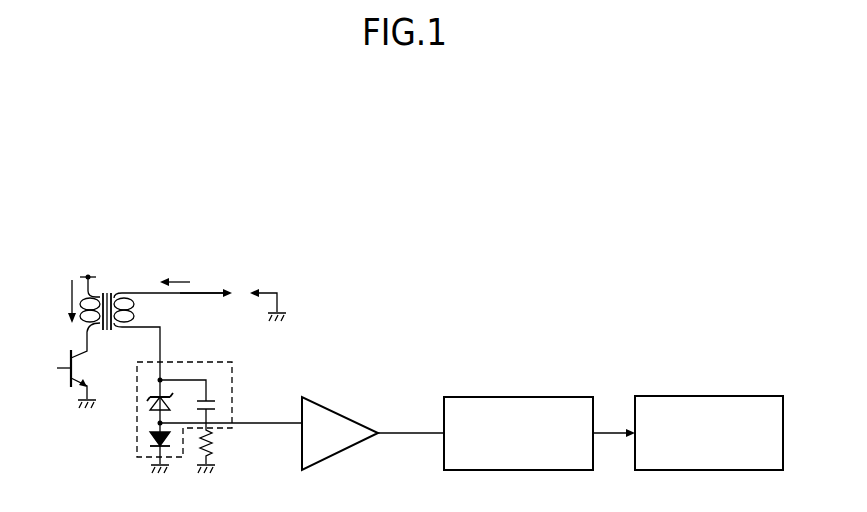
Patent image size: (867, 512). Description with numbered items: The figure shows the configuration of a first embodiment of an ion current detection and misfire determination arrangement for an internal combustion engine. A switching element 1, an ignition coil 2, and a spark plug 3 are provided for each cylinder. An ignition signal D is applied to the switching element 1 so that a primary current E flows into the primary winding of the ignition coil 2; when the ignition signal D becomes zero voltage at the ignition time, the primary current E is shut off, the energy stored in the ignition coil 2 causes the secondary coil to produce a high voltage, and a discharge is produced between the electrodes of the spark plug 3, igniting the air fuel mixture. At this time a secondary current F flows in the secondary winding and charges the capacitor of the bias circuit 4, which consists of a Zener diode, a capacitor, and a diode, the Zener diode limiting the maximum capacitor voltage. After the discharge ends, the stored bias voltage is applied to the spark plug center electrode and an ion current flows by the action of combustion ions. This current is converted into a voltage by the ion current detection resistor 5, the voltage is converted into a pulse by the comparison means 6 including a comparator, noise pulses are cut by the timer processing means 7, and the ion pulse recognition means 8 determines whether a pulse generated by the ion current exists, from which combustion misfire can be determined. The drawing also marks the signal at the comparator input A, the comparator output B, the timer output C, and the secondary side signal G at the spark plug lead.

The switching element 1 is at (64, 390).
The ignition coil 2 is at (121, 283).
The spark plug 3 is at (252, 284).
The bias circuit 4 is at (136, 441).
The ion current detection resistor 5 is at (214, 441).
The comparison means 6 is at (340, 456).
The timer processing means 7 is at (473, 397).
The ion pulse recognition means 8 is at (668, 396).
The comparator input signal A is at (268, 409).
The comparator output signal B is at (412, 414).
The timer output signal C is at (604, 414).
The ignition signal D is at (47, 352).
The primary current E is at (54, 299).
The secondary current F is at (177, 267).
The secondary voltage G is at (211, 287).